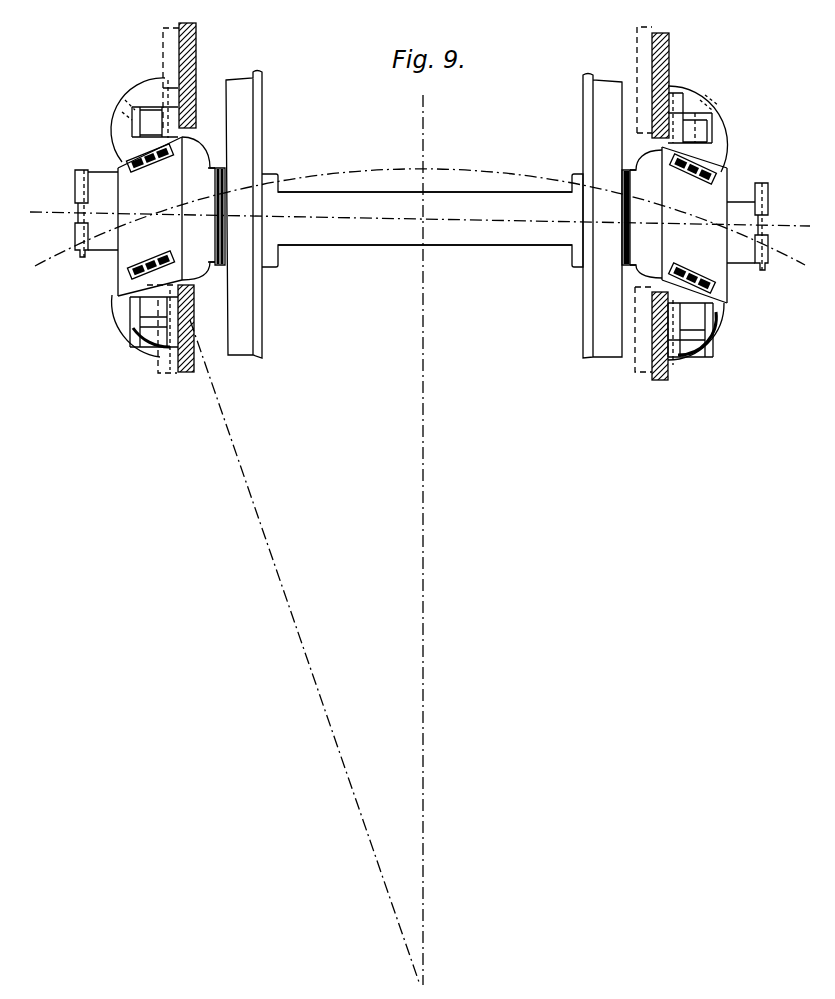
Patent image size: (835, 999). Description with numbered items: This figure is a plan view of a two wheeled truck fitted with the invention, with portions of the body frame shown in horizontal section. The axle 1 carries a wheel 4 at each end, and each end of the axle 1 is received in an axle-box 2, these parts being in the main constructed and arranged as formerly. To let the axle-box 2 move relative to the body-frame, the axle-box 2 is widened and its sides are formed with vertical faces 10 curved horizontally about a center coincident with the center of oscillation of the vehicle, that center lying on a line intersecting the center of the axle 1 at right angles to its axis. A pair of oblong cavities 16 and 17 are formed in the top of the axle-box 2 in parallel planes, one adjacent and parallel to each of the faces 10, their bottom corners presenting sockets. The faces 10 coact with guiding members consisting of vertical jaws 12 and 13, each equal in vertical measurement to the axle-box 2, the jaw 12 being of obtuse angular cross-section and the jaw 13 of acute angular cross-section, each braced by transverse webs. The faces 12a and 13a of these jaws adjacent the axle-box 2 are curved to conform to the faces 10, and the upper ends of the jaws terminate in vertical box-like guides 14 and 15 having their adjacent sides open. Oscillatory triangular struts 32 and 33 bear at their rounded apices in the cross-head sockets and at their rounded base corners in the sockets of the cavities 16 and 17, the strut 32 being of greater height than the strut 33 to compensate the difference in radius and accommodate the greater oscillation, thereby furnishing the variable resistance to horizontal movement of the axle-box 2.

The axle 1 is at (271, 250).
The axle-box 2 is at (164, 212).
The wheel 4 is at (422, 215).
The vertical face 10 is at (128, 141).
The vertical jaw 12 is at (730, 320).
The face of jaw 12a is at (735, 300).
The vertical jaw 13 is at (117, 133).
The face of jaw 13a is at (772, 173).
The vertical box-like guide 14 is at (118, 333).
The vertical box-like guide 15 is at (730, 113).
The oblong cavity 16 is at (138, 272).
The oblong cavity 17 is at (167, 169).
The oscillatory triangular strut 32 is at (162, 263).
The oscillatory triangular strut 33 is at (148, 172).